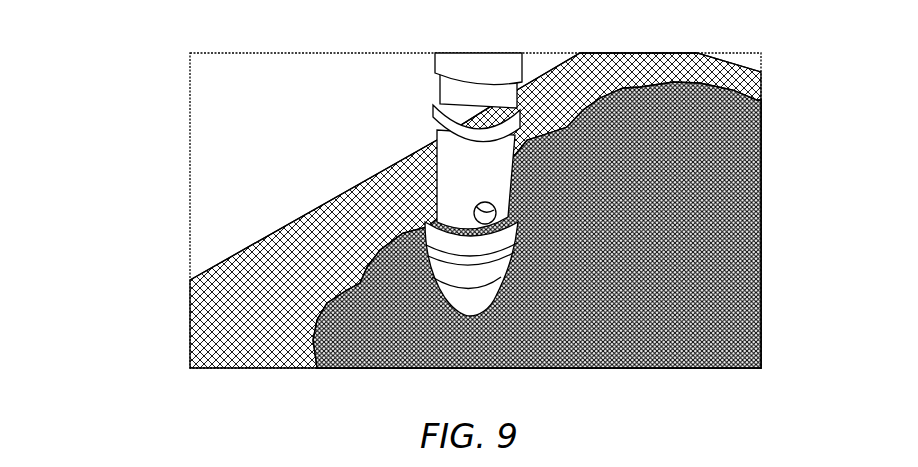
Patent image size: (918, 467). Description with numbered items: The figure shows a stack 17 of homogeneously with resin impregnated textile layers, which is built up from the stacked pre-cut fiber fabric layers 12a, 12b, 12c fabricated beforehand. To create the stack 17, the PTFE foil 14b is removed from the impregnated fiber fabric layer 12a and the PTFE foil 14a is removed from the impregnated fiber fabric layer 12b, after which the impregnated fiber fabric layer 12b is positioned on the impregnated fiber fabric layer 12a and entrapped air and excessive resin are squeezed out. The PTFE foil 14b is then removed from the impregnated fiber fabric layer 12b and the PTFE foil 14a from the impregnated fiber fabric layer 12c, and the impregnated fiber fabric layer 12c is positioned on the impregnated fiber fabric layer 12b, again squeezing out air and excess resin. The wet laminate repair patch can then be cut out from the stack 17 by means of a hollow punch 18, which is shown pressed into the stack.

The pre-cut fiber fabric layer 12a is at (391, 210).
The pre-cut fiber fabric layer 12b is at (391, 210).
The pre-cut fiber fabric layer 12c is at (213, 258).
The PTFE foil 14a is at (545, 157).
The PTFE foil 14b is at (768, 78).
The stack of homogeneously with resin impregnated textile layers 17 is at (768, 232).
The hollow punch 18 is at (444, 93).